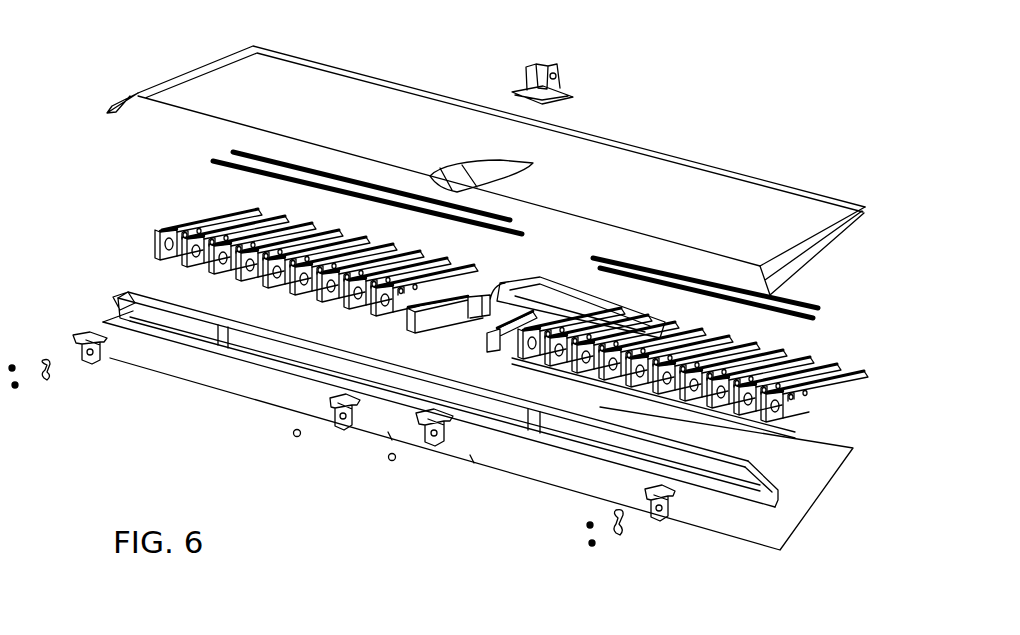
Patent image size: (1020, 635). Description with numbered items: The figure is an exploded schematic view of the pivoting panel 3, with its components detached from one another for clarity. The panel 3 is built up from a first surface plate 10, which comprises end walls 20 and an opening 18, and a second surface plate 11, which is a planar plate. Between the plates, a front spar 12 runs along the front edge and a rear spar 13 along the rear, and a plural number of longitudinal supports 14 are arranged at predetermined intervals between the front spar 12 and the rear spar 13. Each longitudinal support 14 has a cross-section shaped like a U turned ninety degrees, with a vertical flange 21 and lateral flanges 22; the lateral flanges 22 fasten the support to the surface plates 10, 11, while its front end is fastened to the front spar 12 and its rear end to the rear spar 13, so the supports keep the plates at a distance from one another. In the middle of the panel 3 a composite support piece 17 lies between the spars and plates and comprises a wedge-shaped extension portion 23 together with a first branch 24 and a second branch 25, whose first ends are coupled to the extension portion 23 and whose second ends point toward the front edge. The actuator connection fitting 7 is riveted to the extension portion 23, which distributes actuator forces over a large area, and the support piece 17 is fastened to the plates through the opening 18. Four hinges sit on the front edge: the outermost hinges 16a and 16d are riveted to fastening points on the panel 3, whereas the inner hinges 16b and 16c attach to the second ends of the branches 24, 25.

The panel 3 is at (772, 152).
The actuator connection fitting 7 is at (556, 80).
The first surface plate 10 is at (320, 100).
The second surface plate 11 is at (740, 523).
The front spar 12 is at (123, 298).
The rear spar 13 is at (215, 160).
The longitudinal support 14 is at (136, 248).
The hinge 16a is at (78, 348).
The hinge 16b is at (340, 432).
The hinge 16c is at (435, 448).
The hinge 16d is at (660, 518).
The support piece 17 is at (488, 263).
The opening 18 is at (493, 173).
The end wall 20 is at (137, 98).
The vertical flange 21 is at (787, 373).
The lateral flange 22 is at (770, 362).
The extension portion 23 is at (528, 297).
The first branch 24 is at (422, 318).
The second branch 25 is at (500, 350).